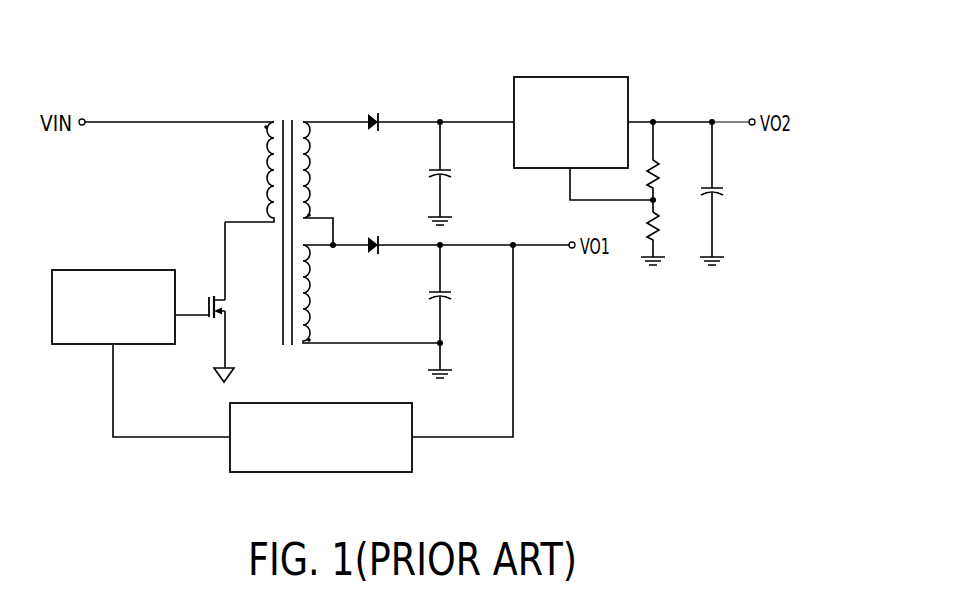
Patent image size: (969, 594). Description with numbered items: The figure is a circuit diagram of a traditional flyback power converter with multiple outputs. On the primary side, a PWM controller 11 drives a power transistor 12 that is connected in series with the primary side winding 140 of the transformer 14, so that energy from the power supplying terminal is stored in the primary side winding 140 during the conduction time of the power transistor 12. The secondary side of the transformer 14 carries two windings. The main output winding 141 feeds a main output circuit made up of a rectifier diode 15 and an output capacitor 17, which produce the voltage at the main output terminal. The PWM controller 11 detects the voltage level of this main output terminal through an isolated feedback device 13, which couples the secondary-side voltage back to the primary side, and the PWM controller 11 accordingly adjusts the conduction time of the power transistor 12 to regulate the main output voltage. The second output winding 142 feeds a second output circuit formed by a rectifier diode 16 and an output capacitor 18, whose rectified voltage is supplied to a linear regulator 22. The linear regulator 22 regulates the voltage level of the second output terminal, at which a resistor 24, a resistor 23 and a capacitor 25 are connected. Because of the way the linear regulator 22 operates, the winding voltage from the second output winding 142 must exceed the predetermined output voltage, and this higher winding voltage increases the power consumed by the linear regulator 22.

The PWM controller 11 is at (108, 269).
The power transistor 12 is at (210, 283).
The feedback device 13 is at (315, 402).
The transformer 14 is at (305, 198).
The primary side winding 140 is at (258, 178).
The main output winding 141 is at (316, 316).
The second output winding 142 is at (316, 160).
The rectifier diode 15 is at (371, 231).
The rectifier diode 16 is at (377, 107).
The output capacitor 17 is at (456, 296).
The output capacitor 18 is at (456, 172).
The linear regulator 22 is at (588, 76).
The resistor 23 is at (669, 218).
The resistor 24 is at (669, 168).
The capacitor 25 is at (731, 190).